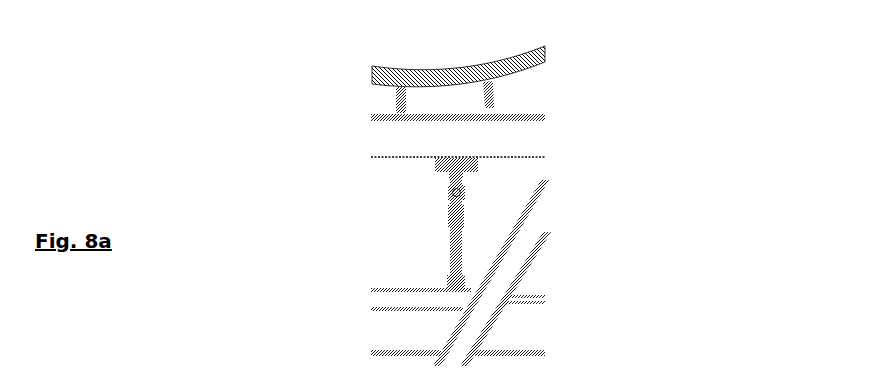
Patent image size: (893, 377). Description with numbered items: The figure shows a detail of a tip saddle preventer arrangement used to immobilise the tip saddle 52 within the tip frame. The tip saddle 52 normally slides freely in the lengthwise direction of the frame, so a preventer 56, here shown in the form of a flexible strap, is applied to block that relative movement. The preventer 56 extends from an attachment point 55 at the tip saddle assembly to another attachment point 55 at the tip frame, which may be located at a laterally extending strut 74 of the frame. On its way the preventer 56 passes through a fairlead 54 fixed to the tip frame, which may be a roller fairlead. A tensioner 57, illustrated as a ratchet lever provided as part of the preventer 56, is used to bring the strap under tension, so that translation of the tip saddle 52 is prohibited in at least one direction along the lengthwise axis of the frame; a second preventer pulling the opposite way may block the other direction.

The tip saddle 52 is at (370, 78).
The laterally extending strut 74 is at (394, 143).
The fairlead 54 is at (476, 172).
The tensioner 57 is at (450, 207).
The attachment point 55 is at (450, 283).
The preventer 56 is at (462, 262).